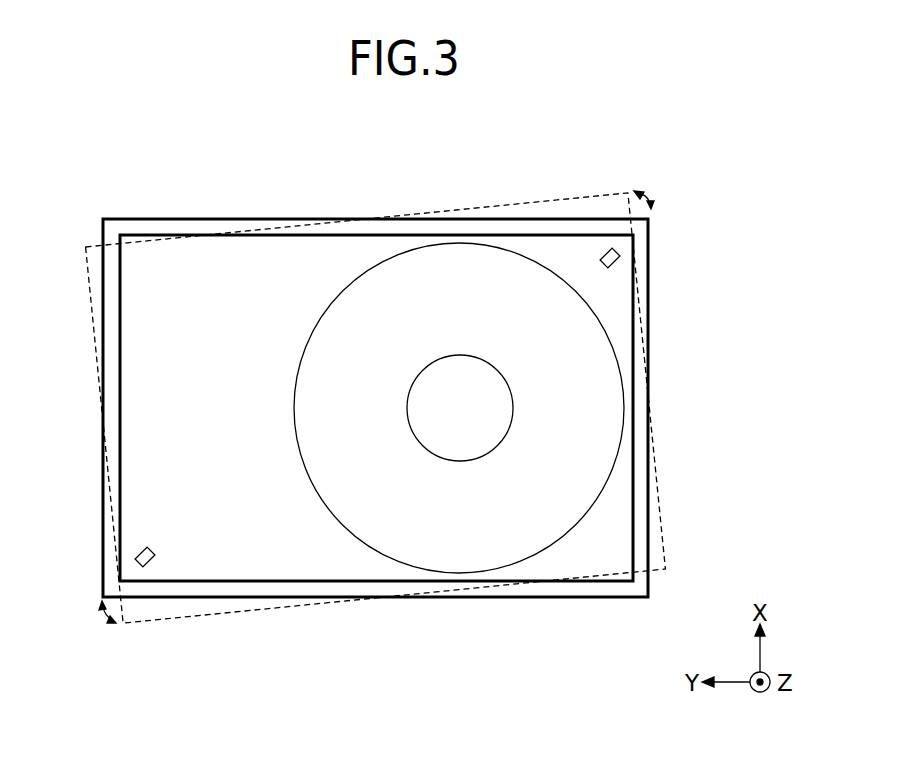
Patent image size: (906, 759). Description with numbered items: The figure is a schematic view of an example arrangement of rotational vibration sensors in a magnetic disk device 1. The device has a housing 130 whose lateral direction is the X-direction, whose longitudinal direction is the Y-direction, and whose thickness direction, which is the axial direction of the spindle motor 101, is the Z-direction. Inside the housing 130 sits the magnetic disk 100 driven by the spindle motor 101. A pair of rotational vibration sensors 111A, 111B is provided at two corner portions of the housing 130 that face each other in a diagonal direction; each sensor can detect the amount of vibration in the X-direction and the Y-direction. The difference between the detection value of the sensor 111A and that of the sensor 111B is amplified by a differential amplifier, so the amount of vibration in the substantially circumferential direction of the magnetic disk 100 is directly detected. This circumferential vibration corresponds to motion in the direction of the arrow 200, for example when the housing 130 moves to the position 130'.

The magnetic disk device 1 is at (571, 167).
The magnetic disk 100 is at (590, 368).
The spindle motor 101 is at (493, 392).
The housing 130 is at (420, 408).
The position of housing 130' is at (396, 378).
The arrow 200 is at (643, 197).
The rotational vibration sensor 111A is at (618, 262).
The rotational vibration sensor 111B is at (152, 563).